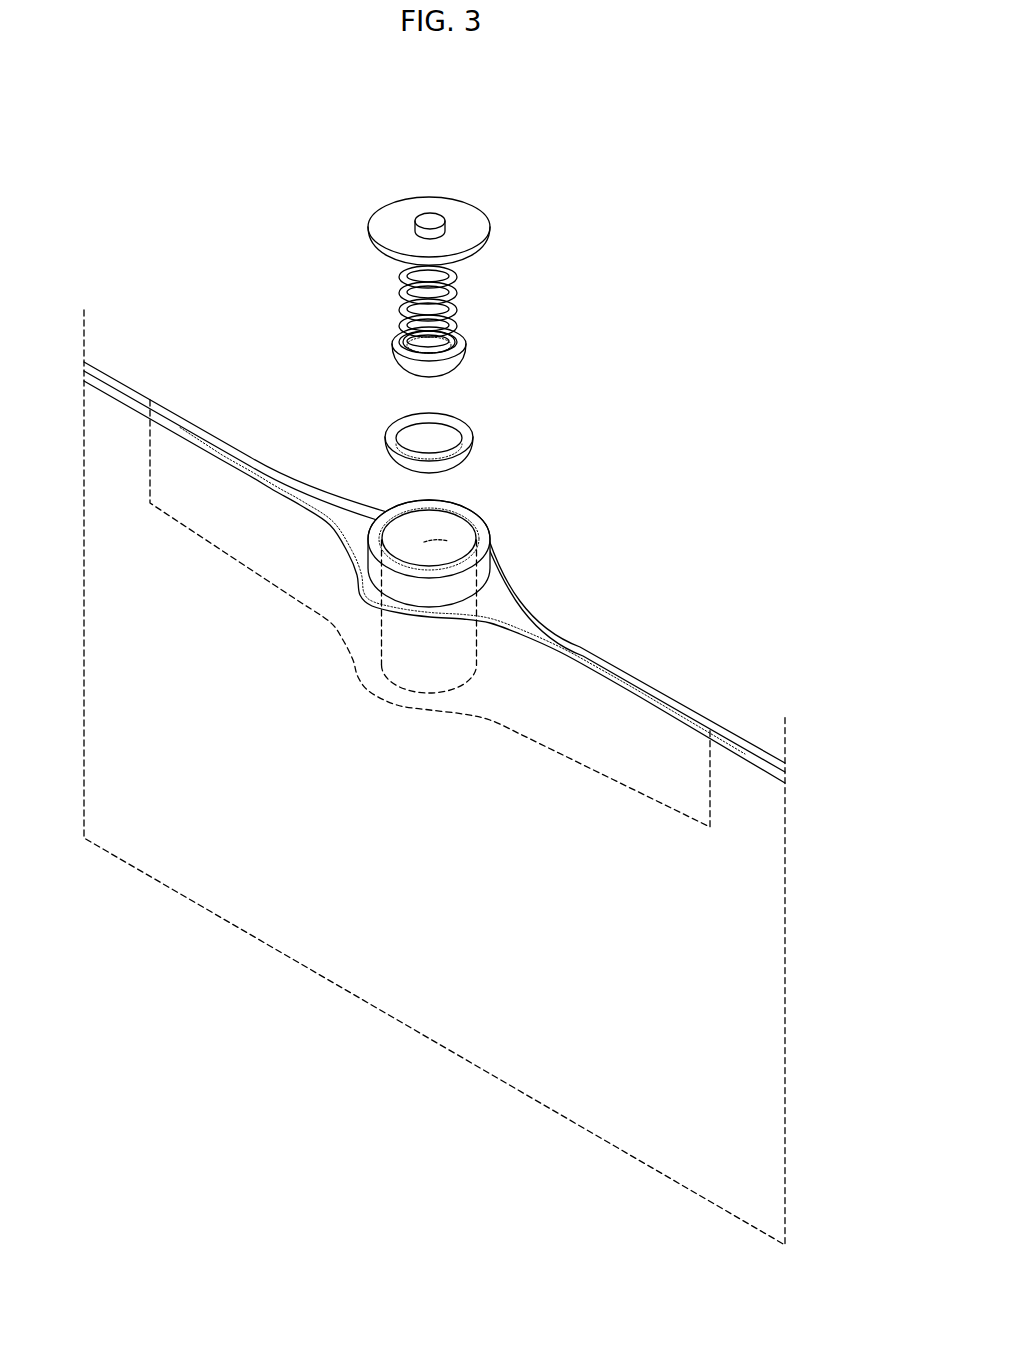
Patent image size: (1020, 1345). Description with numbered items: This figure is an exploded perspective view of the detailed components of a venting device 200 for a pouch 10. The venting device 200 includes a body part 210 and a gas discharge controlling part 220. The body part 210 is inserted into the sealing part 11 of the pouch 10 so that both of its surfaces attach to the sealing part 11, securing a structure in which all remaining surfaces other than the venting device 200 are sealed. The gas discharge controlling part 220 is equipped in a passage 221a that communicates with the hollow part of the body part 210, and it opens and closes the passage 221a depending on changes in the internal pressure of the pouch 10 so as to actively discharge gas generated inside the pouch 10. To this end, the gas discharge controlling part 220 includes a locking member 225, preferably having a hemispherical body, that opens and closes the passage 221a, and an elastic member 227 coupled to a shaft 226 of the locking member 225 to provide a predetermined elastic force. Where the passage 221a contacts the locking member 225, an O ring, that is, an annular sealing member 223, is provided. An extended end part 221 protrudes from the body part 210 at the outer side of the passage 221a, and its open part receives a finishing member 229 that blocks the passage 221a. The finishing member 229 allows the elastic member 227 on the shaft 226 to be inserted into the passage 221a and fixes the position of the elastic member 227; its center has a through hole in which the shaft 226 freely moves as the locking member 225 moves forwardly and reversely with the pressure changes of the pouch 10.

The pouch 10 is at (405, 890).
The sealing part 11 is at (121, 386).
The venting device 200 is at (434, 703).
The body part 210 is at (550, 640).
The gas discharge controlling part 220 is at (508, 298).
The extended end part 221 is at (455, 505).
The passage 221a is at (432, 541).
The annular sealing member 223 is at (487, 441).
The locking member 225 is at (466, 347).
The shaft 226 is at (430, 221).
The elastic member 227 is at (457, 300).
The finishing member 229 is at (478, 194).